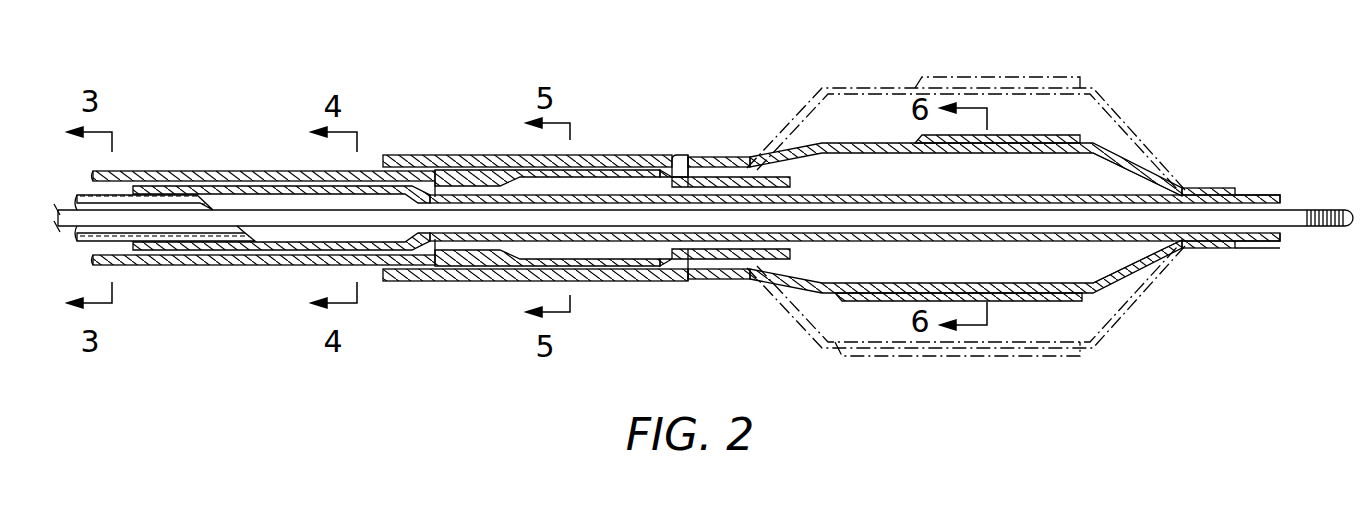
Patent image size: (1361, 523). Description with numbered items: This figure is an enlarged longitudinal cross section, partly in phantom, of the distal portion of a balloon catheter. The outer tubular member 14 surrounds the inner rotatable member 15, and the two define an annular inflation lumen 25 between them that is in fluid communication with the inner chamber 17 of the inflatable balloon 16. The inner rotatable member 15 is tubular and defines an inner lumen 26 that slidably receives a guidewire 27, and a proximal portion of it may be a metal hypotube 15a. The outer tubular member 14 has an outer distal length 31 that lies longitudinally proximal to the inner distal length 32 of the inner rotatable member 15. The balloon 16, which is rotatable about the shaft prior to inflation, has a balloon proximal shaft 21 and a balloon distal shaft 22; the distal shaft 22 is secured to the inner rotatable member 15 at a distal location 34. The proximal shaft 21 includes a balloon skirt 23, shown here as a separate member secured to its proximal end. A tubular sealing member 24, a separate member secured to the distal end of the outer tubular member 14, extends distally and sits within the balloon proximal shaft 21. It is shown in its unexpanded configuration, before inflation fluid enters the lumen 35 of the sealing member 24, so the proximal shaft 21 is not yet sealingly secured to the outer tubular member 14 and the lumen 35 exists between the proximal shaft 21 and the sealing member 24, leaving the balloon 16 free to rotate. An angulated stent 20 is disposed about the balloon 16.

The outer tubular member 14 is at (288, 172).
The inner rotatable member 15 is at (640, 196).
The metal hypotube 15a is at (118, 193).
The inflatable balloon 16 is at (850, 143).
The inner chamber 17 is at (1095, 178).
The angulated stent 20 is at (990, 75).
The balloon proximal shaft 21 is at (710, 272).
The balloon distal shaft 22 is at (1196, 188).
The balloon skirt 23 is at (445, 155).
The tubular sealing member 24 is at (681, 158).
The annular inflation lumen 25 is at (295, 264).
The inner lumen 26 is at (213, 230).
The guidewire 27 is at (1298, 208).
The outer distal length 31 is at (445, 264).
The inner distal length 32 is at (1250, 195).
The distal location 34 is at (1237, 243).
The lumen 35 is at (500, 264).